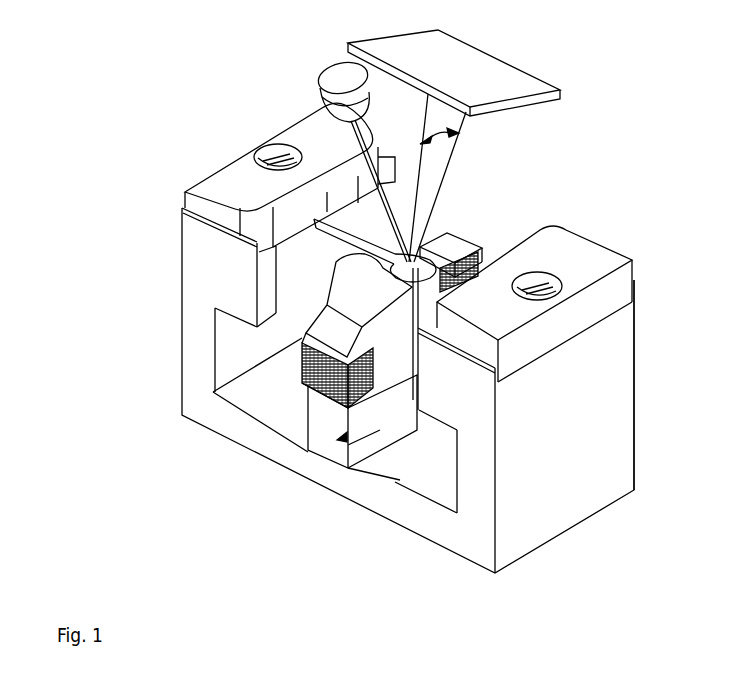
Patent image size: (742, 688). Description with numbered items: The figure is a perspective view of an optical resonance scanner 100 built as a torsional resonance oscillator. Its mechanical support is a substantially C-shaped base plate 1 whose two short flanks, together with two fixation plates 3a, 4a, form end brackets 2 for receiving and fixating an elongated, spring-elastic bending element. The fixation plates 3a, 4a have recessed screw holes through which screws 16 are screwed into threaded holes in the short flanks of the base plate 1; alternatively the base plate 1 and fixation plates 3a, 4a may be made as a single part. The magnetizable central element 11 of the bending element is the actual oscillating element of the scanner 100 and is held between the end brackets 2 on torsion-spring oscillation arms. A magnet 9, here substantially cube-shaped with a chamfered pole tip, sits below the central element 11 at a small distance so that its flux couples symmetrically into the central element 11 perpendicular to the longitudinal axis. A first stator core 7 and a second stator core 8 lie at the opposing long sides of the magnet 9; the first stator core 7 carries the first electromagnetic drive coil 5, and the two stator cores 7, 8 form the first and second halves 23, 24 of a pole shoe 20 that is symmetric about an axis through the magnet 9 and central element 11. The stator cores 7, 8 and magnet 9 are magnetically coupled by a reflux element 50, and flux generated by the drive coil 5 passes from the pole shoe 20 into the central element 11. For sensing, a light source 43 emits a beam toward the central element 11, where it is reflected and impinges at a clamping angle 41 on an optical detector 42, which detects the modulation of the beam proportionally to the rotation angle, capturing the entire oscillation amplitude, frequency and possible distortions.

The base plate 1 is at (473, 527).
The end brackets 2 is at (590, 427).
The fixation plate 3a is at (253, 183).
The fixation plate 4a is at (572, 252).
The first electromagnetic drive coil 5 is at (303, 368).
The first stator core 7 is at (345, 433).
The second stator core 8 is at (463, 232).
The magnet 9 is at (390, 340).
The central element 11 is at (372, 288).
The screws 16 is at (560, 283).
The pole shoe 20 is at (332, 427).
The first half of pole shoe 23 is at (310, 408).
The second half of pole shoe 24 is at (490, 245).
The clamping angle 41 is at (462, 150).
The optical detector 42 is at (455, 62).
The light source 43 is at (338, 78).
The reflux element 50 is at (340, 440).
The optical resonance scanner 100 is at (628, 125).